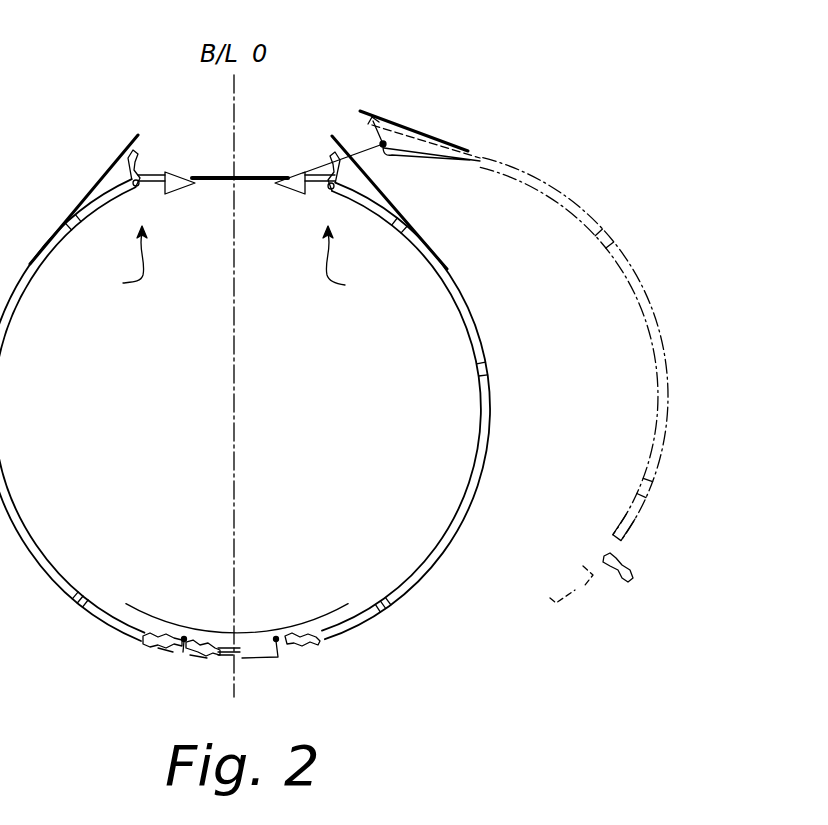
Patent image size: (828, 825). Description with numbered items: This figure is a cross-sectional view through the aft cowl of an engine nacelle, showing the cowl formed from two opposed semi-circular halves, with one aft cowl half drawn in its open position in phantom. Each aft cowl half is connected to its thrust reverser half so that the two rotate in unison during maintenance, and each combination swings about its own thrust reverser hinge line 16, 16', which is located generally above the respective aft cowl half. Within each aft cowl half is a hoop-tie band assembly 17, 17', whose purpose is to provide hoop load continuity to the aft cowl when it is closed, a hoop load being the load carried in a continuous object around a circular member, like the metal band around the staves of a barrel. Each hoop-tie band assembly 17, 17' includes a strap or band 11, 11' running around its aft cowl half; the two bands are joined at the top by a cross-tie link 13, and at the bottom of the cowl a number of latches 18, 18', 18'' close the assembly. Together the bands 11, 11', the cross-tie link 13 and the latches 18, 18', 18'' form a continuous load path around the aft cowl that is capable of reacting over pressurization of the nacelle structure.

The strap or band 11 is at (72, 387).
The strap or band 11' is at (485, 338).
The cross-tie link 13 is at (236, 155).
The thrust reverser hinge line 16 is at (90, 151).
The thrust reverser hinge line 16' is at (381, 156).
The hoop-tie band assembly 17 is at (123, 261).
The hoop-tie band assembly 17' is at (353, 263).
The latch 18 is at (134, 668).
The latch 18' is at (205, 670).
The latch 18'' is at (306, 666).